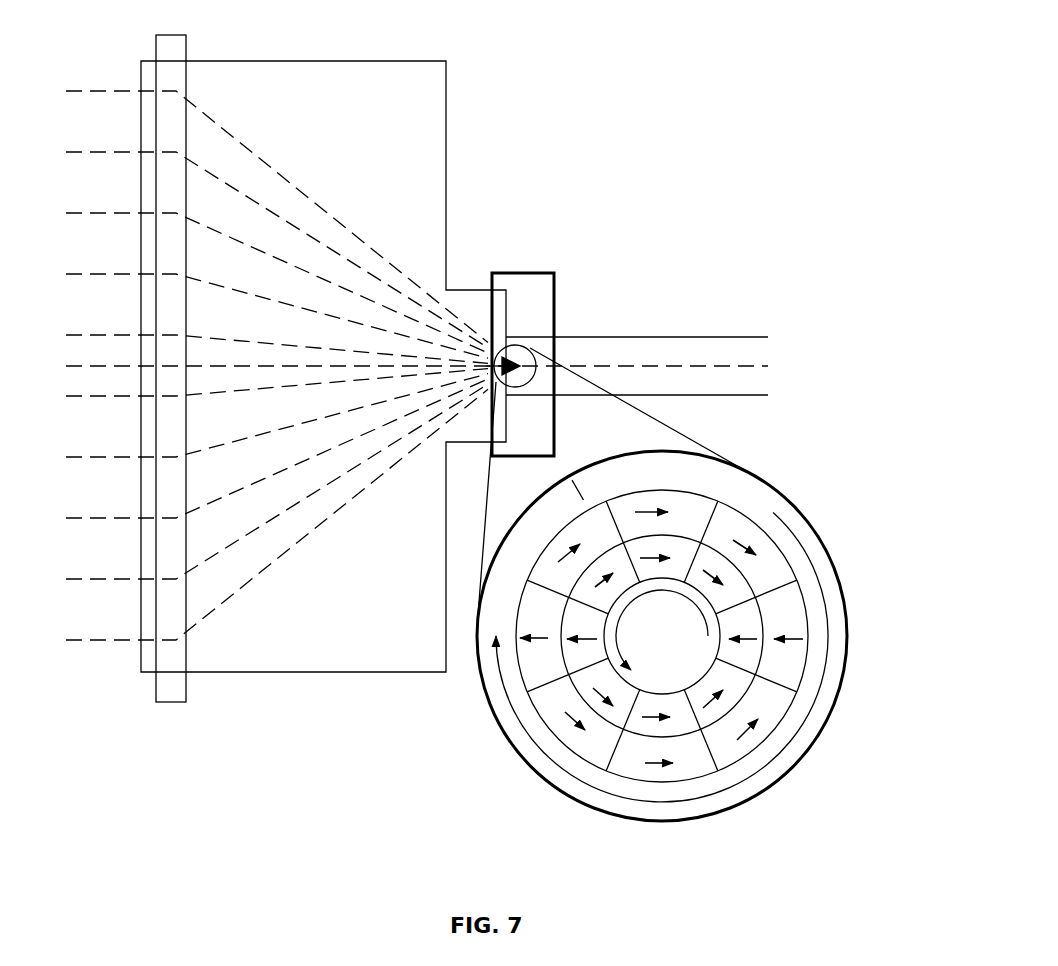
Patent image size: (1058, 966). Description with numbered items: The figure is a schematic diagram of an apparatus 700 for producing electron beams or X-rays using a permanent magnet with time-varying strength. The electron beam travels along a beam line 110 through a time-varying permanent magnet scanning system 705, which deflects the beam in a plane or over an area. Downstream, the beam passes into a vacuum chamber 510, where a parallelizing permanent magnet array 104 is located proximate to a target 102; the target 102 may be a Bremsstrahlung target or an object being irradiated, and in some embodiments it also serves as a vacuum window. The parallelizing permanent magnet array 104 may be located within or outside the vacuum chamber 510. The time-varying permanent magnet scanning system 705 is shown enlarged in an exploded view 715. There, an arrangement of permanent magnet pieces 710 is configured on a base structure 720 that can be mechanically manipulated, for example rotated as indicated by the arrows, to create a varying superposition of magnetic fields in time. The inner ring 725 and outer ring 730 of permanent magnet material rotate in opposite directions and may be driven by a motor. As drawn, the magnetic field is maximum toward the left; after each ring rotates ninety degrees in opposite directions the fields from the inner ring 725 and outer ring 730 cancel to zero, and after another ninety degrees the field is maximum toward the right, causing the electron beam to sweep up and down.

The apparatus 700 is at (616, 61).
The target 102 is at (136, 135).
The parallelizing permanent magnet array 104 is at (191, 44).
The vacuum chamber 510 is at (449, 96).
The time-varying permanent magnet scanning system 705 is at (553, 266).
The beam line 110 is at (700, 358).
The exploded view 715 is at (778, 481).
The base structure 720 is at (738, 767).
The inner ring 725 is at (747, 606).
The outer ring 730 is at (795, 662).
The permanent magnet pieces 710 is at (671, 765).